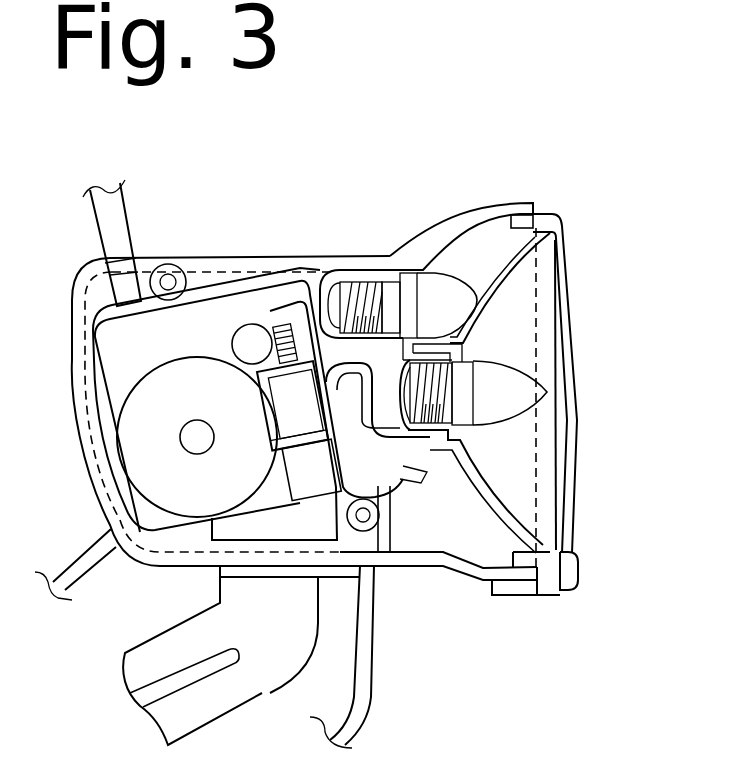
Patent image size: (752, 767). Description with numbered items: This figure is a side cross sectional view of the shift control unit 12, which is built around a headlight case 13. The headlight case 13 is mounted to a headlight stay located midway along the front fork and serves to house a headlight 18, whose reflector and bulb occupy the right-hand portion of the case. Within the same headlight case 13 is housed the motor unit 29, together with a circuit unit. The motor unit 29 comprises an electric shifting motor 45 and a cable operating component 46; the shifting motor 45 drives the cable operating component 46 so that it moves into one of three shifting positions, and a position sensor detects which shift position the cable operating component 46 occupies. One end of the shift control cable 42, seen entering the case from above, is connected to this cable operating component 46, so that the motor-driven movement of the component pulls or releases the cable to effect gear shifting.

The shift control unit 12 is at (402, 205).
The headlight case 13 is at (305, 255).
The headlight 18 is at (500, 380).
The motor unit 29 is at (190, 518).
The shift control cable 42 is at (115, 210).
The electric shifting motor 45 is at (353, 527).
The cable operating component 46 is at (175, 470).